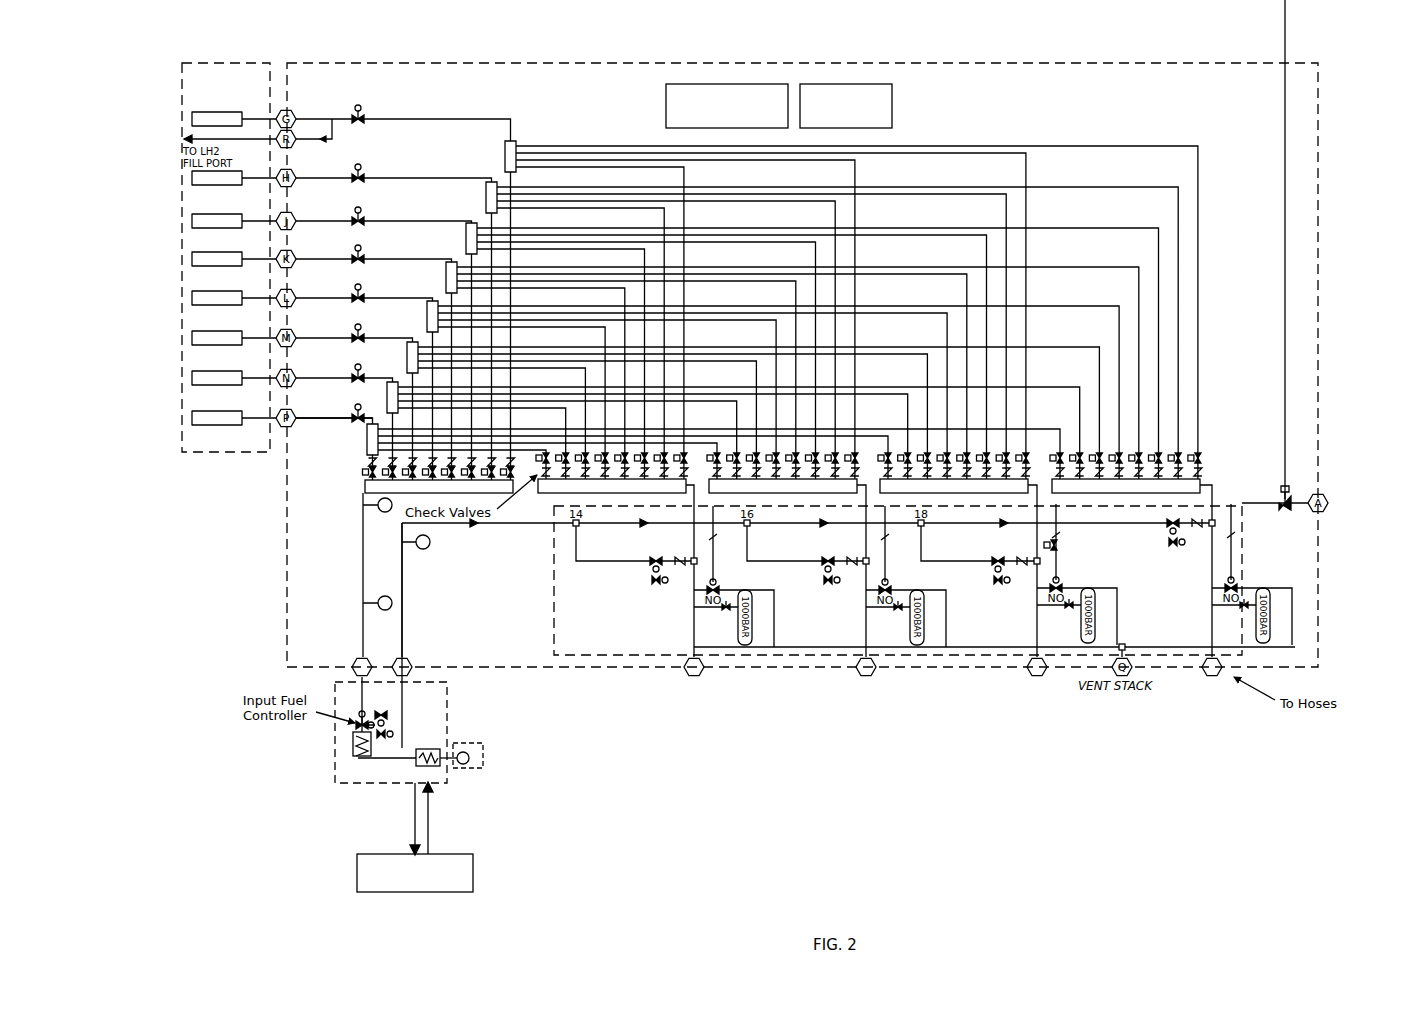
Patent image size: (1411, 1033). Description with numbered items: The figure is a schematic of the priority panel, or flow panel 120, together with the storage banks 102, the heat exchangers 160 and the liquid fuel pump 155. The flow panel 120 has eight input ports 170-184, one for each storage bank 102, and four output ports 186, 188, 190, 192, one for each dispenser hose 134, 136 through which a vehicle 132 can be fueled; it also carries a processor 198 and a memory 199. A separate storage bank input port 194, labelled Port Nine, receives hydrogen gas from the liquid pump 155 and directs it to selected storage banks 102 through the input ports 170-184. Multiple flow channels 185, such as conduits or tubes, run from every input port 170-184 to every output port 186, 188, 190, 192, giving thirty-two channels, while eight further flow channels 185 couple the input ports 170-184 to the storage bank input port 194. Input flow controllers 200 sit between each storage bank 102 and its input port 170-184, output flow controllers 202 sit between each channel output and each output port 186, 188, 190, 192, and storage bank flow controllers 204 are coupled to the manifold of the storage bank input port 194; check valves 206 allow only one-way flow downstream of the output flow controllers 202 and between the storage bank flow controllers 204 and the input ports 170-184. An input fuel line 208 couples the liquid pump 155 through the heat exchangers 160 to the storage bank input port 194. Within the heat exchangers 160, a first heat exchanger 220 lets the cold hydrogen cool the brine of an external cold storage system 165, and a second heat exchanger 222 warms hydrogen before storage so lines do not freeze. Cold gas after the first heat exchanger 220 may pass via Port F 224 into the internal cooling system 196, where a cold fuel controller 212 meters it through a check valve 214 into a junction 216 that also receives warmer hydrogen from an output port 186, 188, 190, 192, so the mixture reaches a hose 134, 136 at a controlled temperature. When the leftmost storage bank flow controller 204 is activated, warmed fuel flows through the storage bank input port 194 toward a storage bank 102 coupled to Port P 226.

The storage banks 102 is at (219, 110).
The flow panel 120 is at (952, 692).
The vehicle 132 is at (680, 683).
The dispenser hose 134 is at (1028, 683).
The dispenser hose 136 is at (1023, 683).
The liquid fuel pump 155 is at (412, 706).
The heat exchangers 160 is at (449, 781).
The external cold storage system 165 is at (415, 837).
The input ports 170-184 is at (522, 143).
The flow channels 185 is at (916, 136).
The output port 186 is at (612, 486).
The output port 188 is at (783, 486).
The output port 190 is at (954, 486).
The output port 192 is at (1330, 457).
The storage bank input port 194 is at (257, 580).
The internal cooling system 196 is at (762, 658).
The processor 198 is at (727, 106).
The memory 199 is at (846, 106).
The input flow controllers 200 is at (368, 113).
The output flow controllers 202 is at (1206, 462).
The storage bank flow controllers 204 is at (356, 472).
The check valves 206 is at (356, 461).
The input fuel line 208 is at (358, 641).
The cold fuel controller 212 is at (648, 576).
The check valve 214 is at (682, 573).
The junction 216 is at (688, 558).
The first heat exchanger 220 is at (414, 770).
The second heat exchanger 222 is at (350, 752).
The Port F 224 is at (417, 599).
The Port P 226 is at (296, 414).